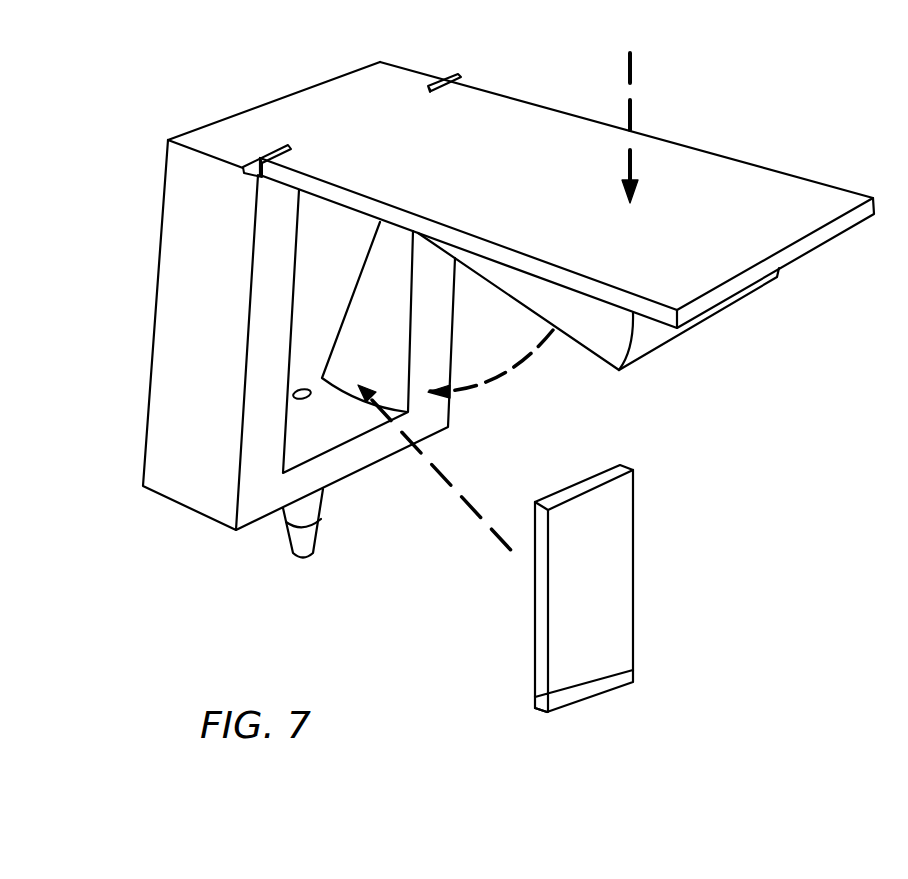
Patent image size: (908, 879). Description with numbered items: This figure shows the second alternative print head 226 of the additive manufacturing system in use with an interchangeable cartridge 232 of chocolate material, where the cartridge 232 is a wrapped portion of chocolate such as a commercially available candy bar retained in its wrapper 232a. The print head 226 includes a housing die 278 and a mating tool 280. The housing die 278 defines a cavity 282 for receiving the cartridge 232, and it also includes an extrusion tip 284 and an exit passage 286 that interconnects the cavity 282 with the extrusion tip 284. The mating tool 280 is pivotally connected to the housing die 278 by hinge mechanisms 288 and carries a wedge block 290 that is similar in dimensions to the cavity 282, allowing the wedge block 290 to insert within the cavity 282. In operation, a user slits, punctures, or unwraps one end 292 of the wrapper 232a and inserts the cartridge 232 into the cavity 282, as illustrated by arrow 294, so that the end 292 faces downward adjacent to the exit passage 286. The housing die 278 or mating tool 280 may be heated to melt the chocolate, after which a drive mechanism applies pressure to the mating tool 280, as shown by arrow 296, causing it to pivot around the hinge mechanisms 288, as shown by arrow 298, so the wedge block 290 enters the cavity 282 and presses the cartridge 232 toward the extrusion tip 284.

The print head 226 is at (188, 532).
The housing die 278 is at (172, 351).
The mating tool 280 is at (772, 180).
The cavity 282 is at (333, 427).
The extrusion tip 284 is at (300, 540).
The exit passage 286 is at (302, 383).
The hinge mechanisms 288 is at (270, 146).
The wedge block 290 is at (648, 342).
The end 292 is at (565, 712).
The arrow 294 is at (475, 508).
The arrow 296 is at (633, 108).
The arrow 298 is at (505, 375).
The cartridge 232 is at (530, 613).
The wrapper 232a is at (580, 668).